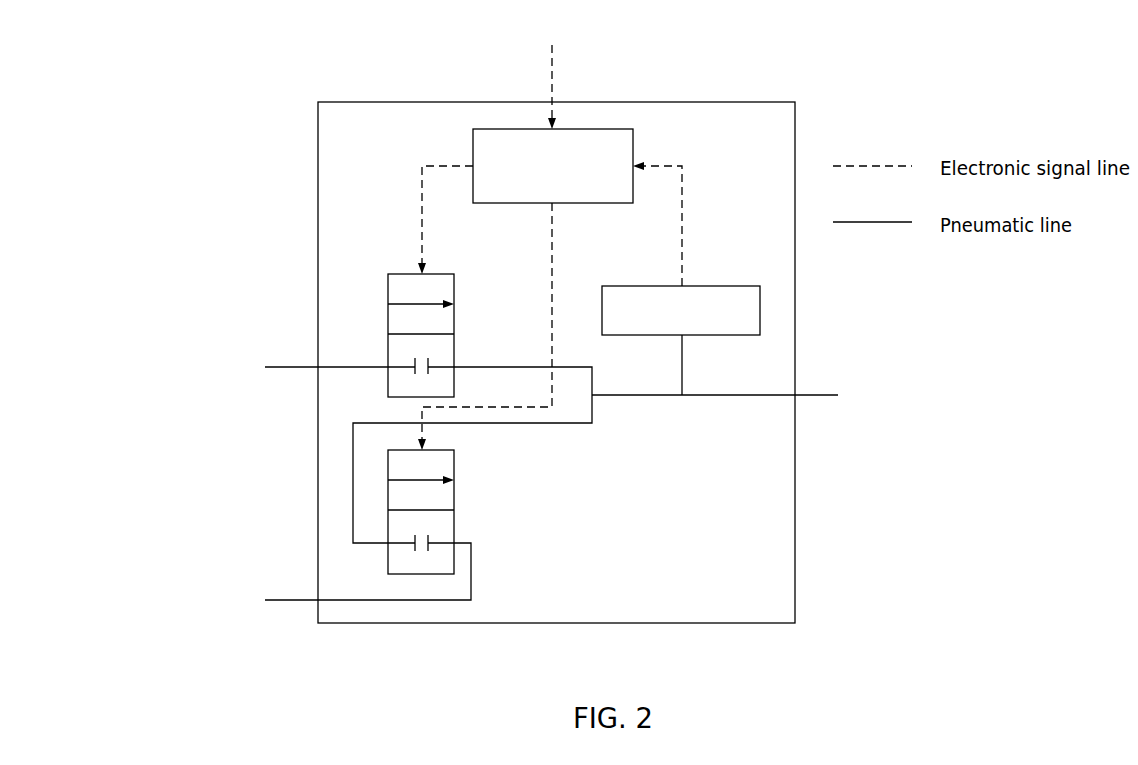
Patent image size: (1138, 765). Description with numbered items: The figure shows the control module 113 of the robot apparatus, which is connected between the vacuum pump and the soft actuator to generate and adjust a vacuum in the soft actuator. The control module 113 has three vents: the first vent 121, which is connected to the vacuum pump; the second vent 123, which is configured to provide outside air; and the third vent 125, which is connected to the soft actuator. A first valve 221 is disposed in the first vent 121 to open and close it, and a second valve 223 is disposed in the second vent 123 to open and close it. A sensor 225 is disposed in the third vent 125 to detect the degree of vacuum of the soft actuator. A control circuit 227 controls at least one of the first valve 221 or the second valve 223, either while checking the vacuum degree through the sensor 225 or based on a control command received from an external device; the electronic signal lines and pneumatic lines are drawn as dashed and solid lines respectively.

The control module 113 is at (756, 92).
The control circuit 227 is at (602, 128).
The first valve 221 is at (400, 292).
The second valve 223 is at (400, 560).
The sensor 225 is at (760, 308).
The first vent 121 is at (318, 366).
The second vent 123 is at (318, 600).
The third vent 125 is at (795, 395).